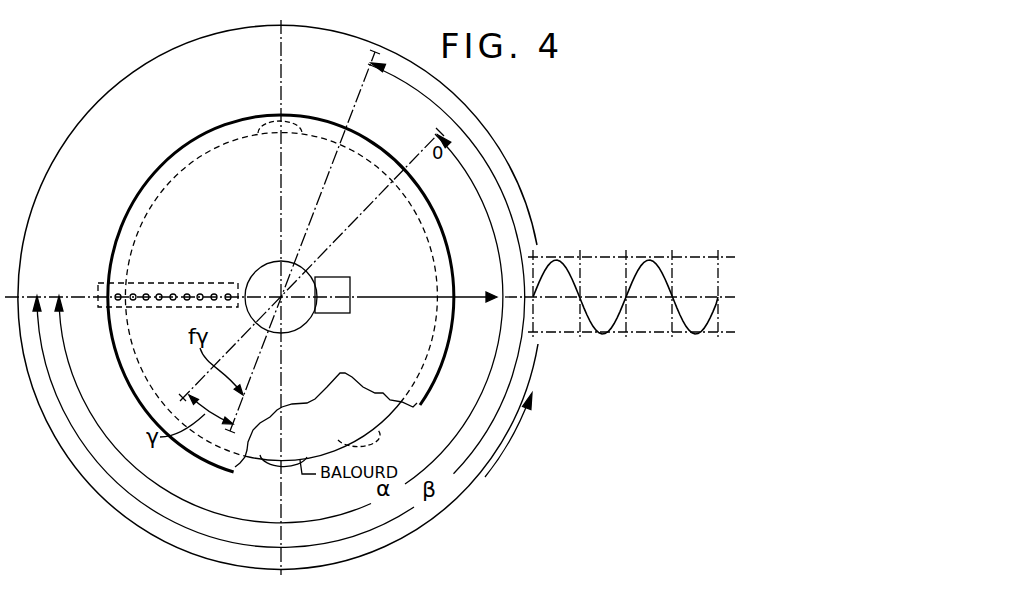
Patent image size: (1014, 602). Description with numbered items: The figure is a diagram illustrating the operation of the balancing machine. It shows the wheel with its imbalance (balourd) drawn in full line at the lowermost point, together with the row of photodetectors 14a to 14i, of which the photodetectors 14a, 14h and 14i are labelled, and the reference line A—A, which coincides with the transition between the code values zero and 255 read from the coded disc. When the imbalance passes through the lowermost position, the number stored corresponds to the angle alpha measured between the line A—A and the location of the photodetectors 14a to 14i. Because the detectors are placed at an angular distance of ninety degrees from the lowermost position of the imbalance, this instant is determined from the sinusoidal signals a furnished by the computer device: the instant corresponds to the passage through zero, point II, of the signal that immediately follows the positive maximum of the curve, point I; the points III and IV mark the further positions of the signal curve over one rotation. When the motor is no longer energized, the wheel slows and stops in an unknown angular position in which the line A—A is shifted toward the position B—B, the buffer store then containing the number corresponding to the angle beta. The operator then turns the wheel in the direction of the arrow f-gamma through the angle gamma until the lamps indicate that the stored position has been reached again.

The photodetector 14i is at (118, 293).
The photodetector 14a is at (133, 292).
The photodetector 14h is at (228, 292).
The code value 255 is at (435, 121).
The line A— A is at (428, 144).
The position B— B is at (353, 107).
The positive maximum point I is at (513, 295).
The zero passage point II is at (281, 500).
The signal point III is at (101, 296).
The signal point IV is at (281, 67).
The sinusoidal signals a is at (637, 265).